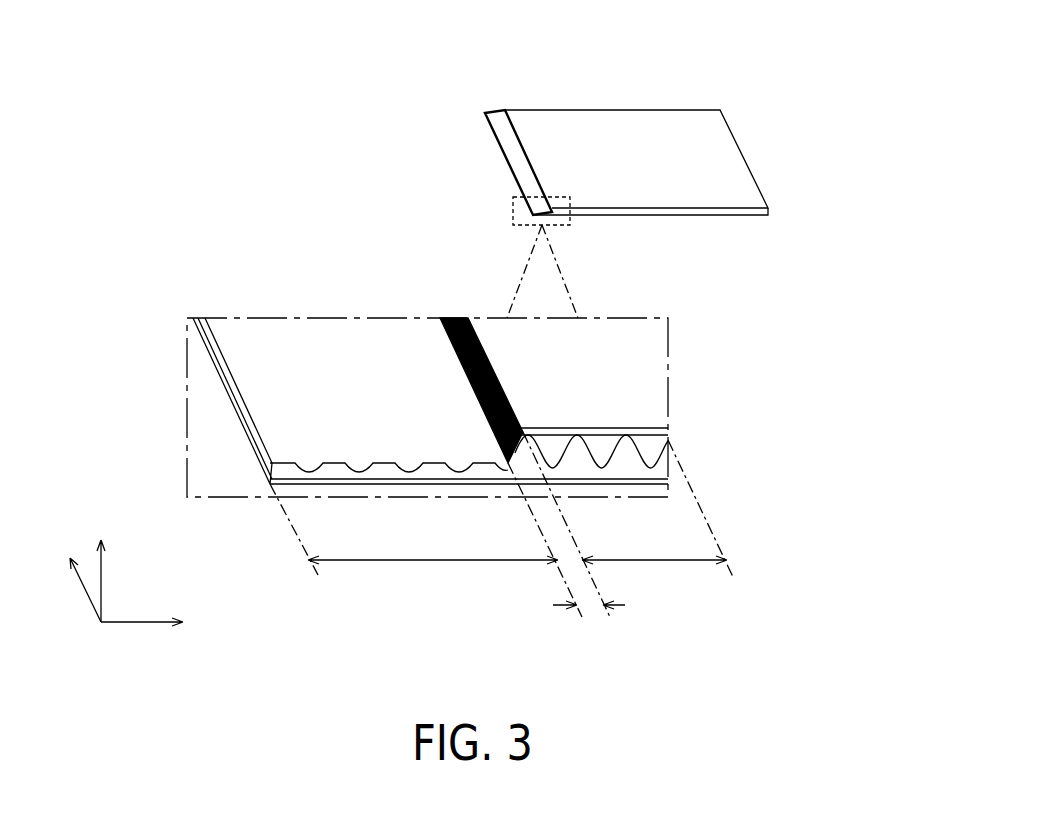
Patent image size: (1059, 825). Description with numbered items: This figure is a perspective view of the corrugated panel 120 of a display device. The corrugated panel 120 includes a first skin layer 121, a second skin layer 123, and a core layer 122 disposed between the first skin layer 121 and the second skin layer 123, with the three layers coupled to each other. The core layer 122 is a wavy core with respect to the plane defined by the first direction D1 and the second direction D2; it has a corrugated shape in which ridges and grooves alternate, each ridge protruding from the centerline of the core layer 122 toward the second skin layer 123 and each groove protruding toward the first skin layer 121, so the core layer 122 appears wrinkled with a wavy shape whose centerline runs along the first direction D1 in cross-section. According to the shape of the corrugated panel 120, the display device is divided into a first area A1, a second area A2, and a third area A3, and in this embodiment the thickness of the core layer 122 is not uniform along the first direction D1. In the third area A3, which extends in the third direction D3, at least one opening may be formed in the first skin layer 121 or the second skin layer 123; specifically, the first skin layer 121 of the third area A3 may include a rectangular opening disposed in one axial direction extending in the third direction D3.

The corrugated panel 120 is at (742, 36).
The first skin layer 121 is at (652, 392).
The core layer 122 is at (660, 457).
The second skin layer 123 is at (655, 479).
The first area A1 is at (433, 572).
The second area A2 is at (654, 572).
The third area A3 is at (589, 620).
The first direction D1 is at (161, 624).
The second direction D2 is at (100, 571).
The third direction D3 is at (76, 577).